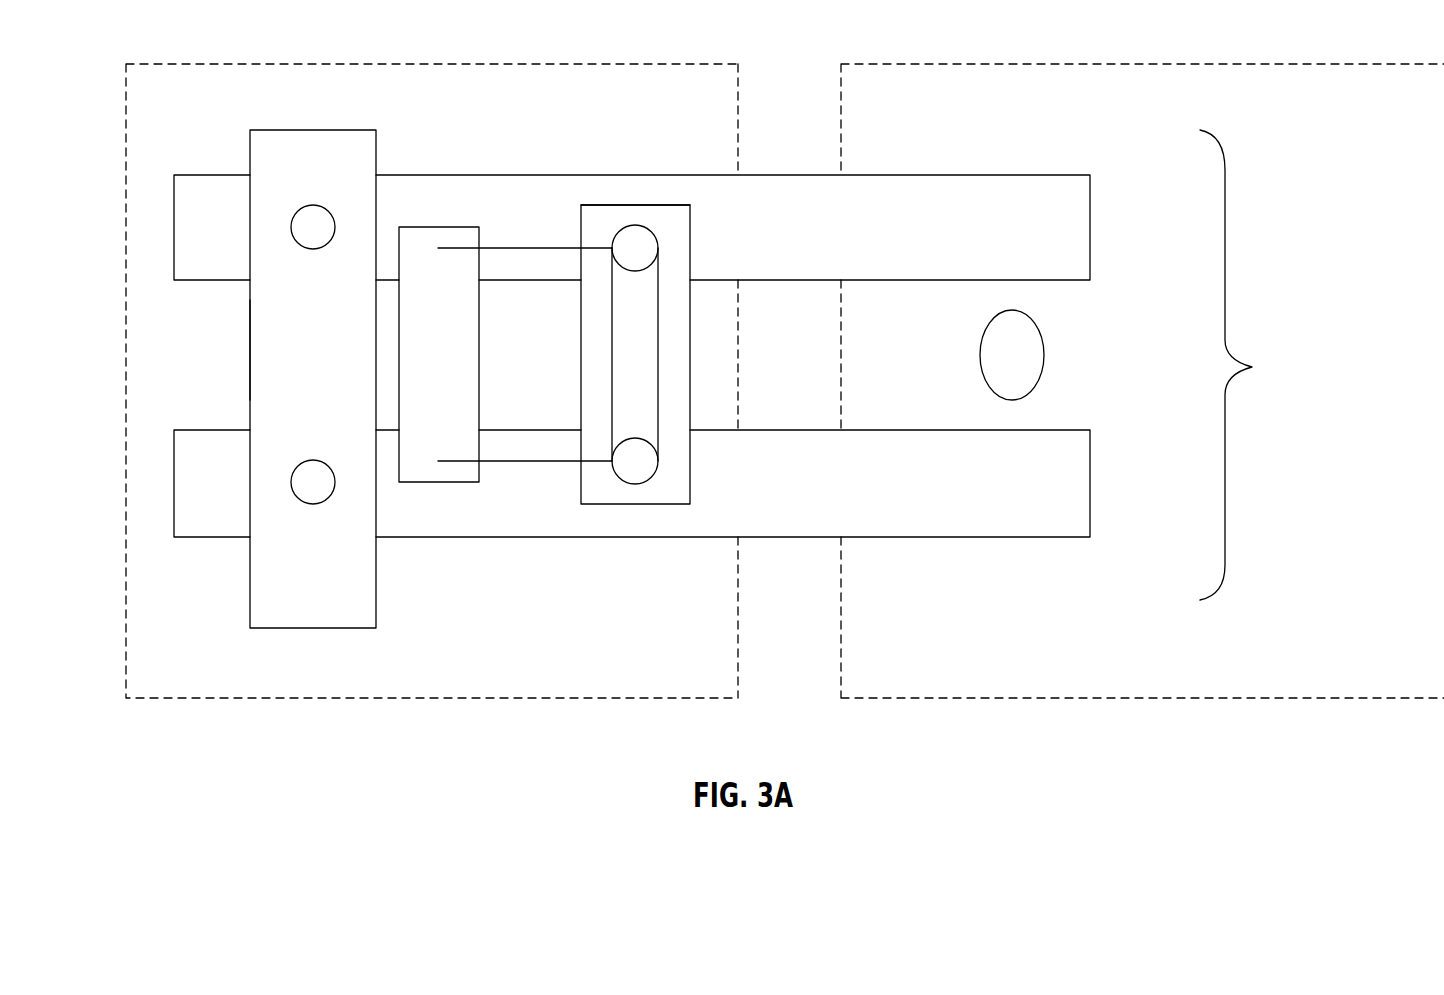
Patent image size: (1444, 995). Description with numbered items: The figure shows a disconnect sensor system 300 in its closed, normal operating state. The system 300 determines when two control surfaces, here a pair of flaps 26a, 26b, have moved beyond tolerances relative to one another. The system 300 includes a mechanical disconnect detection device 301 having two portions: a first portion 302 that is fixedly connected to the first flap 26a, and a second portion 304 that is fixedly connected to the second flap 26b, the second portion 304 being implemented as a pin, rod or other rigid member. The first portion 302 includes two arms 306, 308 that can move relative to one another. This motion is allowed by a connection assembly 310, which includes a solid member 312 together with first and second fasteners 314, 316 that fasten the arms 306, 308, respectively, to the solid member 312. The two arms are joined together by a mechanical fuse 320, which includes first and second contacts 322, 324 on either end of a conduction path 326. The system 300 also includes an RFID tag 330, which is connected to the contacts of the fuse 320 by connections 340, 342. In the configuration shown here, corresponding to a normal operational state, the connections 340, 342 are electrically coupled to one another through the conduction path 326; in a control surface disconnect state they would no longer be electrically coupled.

The flap 26a is at (198, 62).
The flap 26b is at (912, 62).
The disconnect sensor system 300 is at (160, 740).
The mechanical disconnect detection device 301 is at (1252, 365).
The first portion 302 is at (548, 168).
The second portion 304 is at (1044, 355).
The arm 306 is at (1023, 175).
The arm 308 is at (1023, 430).
The connection assembly 310 is at (312, 126).
The solid member 312 is at (250, 343).
The first fastener 314 is at (298, 212).
The second fastener 316 is at (303, 503).
The mechanical fuse 320 is at (635, 205).
The first contact 322 is at (658, 250).
The second contact 324 is at (658, 459).
The conduction path 326 is at (628, 348).
The RFID tag 330 is at (439, 227).
The connection 340 is at (548, 248).
The connection 342 is at (525, 461).